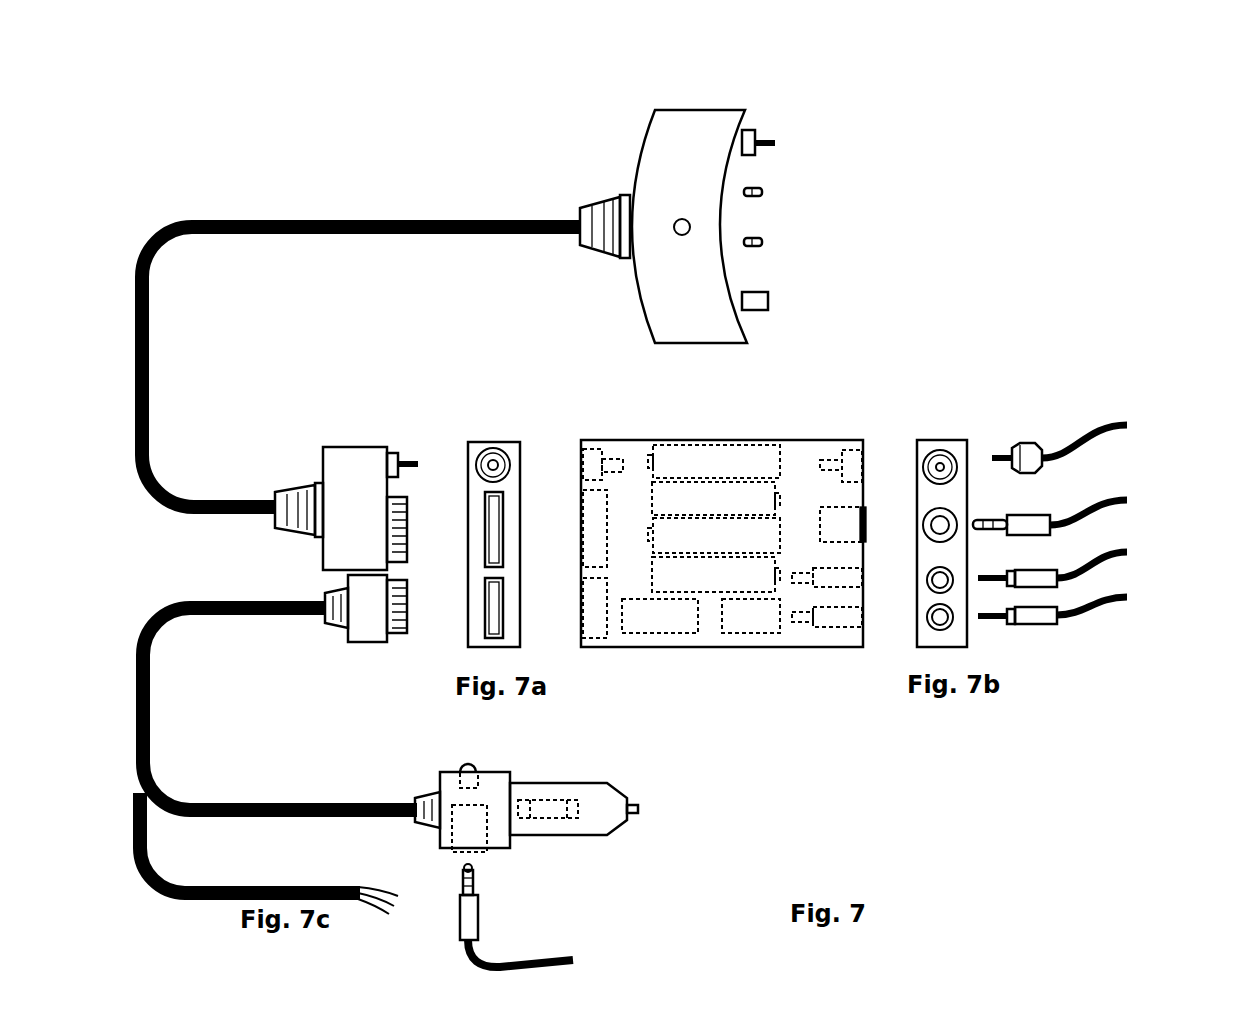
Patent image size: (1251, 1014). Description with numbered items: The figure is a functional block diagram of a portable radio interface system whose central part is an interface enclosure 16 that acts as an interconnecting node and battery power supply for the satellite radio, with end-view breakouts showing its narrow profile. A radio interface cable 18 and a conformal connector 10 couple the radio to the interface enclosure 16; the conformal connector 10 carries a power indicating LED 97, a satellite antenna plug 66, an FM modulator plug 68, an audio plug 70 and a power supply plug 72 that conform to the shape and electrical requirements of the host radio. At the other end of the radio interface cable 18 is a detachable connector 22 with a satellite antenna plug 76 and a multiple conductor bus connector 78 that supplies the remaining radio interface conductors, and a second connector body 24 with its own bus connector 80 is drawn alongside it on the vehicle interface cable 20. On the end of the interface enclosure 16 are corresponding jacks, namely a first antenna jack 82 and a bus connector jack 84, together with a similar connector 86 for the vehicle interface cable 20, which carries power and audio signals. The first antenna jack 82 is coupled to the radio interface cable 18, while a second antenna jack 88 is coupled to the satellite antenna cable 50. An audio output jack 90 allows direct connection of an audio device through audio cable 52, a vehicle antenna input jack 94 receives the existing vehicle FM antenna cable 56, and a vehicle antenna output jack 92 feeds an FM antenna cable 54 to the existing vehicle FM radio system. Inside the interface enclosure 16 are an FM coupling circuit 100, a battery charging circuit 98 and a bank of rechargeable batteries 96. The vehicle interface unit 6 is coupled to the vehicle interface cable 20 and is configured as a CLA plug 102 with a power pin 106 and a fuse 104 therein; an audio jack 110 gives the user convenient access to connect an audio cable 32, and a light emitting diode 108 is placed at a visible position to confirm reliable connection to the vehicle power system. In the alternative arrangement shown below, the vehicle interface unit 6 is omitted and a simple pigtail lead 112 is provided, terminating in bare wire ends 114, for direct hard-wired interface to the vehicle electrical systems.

In FIG. 7C, the vehicle interface unit 6 is at (440, 784).
In FIG. 7, the conformal connector 10 is at (637, 163).
In FIG. 7, the interface enclosure 16 is at (680, 440).
In FIG. 7A, the interface enclosure 16 is at (500, 442).
In FIG. 7B, the interface enclosure 16 is at (933, 440).
In FIG. 7, the radio interface cable 18 is at (158, 262).
In FIG. 7C, the vehicle interface cable 20 is at (160, 780).
In FIG. 7, the detachable connector 22 is at (323, 449).
In FIG. 7, the connector housing 24 is at (346, 637).
In FIG. 7C, the audio cable 32 is at (480, 938).
In FIG. 7, the satellite antenna cable 50 is at (1022, 443).
In FIG. 7, the audio cable 52 is at (1022, 515).
In FIG. 7, the FM antenna cable 54 is at (1030, 570).
In FIG. 7, the vehicle FM antenna cable 56 is at (1030, 624).
In FIG. 7, the satellite antenna plug 66 is at (757, 131).
In FIG. 7, the FM modulator plug 68 is at (760, 188).
In FIG. 7, the audio plug 70 is at (760, 238).
In FIG. 7, the power supply plug 72 is at (767, 292).
In FIG. 7, the satellite antenna plug 76 is at (393, 453).
In FIG. 7, the multiple conductor bus connector 78 is at (408, 512).
In FIG. 7, the multi-pin connector 80 is at (408, 595).
In FIG. 7A, the first antenna jack 82 is at (580, 471).
In FIG. 7A, the bus connector jack 84 is at (580, 508).
In FIG. 7A, the connector 86 is at (580, 595).
In FIG. 7B, the second antenna jack 88 is at (906, 458).
In FIG. 7B, the audio output jack 90 is at (906, 513).
In FIG. 7B, the vehicle antenna output jack 92 is at (906, 573).
In FIG. 7B, the vehicle antenna input jack 94 is at (906, 616).
In FIG. 7, the bank of rechargeable batteries 96 is at (779, 558).
In FIG. 7, the power indicating LED 97 is at (676, 235).
In FIG. 7, the battery charging circuit 98 is at (648, 634).
In FIG. 7, the FM coupling circuit 100 is at (742, 634).
In FIG. 7C, the CLA plug 102 is at (555, 783).
In FIG. 7C, the fuse 104 is at (540, 820).
In FIG. 7C, the power pin 106 is at (638, 815).
In FIG. 7C, the light emitting diode 108 is at (462, 764).
In FIG. 7C, the audio jack 110 is at (445, 848).
In FIG. 7C, the pigtail lead 112 is at (167, 874).
In FIG. 7C, the bare wires 114 is at (390, 915).